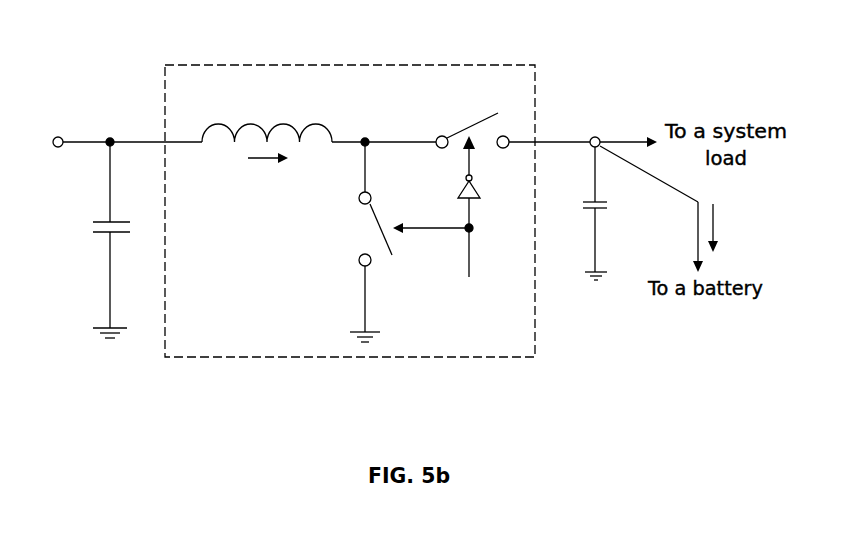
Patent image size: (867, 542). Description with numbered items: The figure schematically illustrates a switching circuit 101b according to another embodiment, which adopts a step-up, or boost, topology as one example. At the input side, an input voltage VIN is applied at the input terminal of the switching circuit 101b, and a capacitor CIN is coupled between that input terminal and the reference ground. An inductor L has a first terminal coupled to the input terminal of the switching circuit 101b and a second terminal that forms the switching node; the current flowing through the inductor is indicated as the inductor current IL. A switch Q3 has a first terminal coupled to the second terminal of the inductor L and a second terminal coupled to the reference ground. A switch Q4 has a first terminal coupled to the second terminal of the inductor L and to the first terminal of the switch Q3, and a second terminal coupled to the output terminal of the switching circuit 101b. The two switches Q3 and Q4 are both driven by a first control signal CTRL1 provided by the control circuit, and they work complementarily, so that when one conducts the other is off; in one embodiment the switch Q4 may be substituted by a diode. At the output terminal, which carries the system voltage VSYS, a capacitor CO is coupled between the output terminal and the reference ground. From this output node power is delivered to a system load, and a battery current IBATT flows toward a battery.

The switching circuit 101b is at (495, 64).
The input voltage terminal VIN is at (118, 128).
The capacitor CIN is at (94, 242).
The inductor L is at (267, 116).
The inductor current IL is at (268, 173).
The switch Q4 is at (472, 119).
The switch Q3 is at (356, 244).
The first control signal CTRL1 is at (449, 219).
The system voltage node VSYS is at (617, 125).
The capacitor CO is at (610, 213).
The battery current IBATT is at (678, 209).